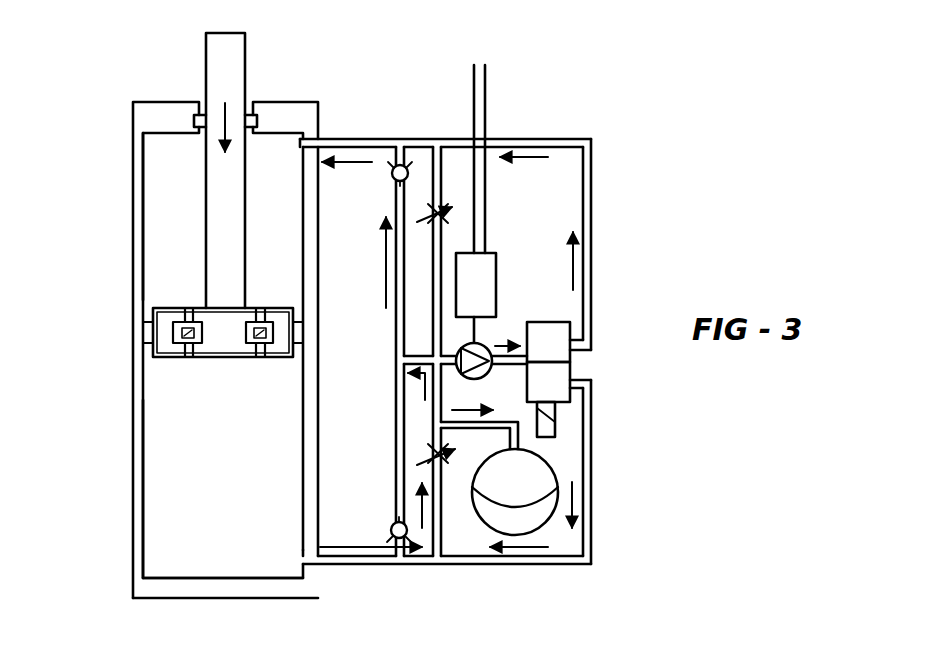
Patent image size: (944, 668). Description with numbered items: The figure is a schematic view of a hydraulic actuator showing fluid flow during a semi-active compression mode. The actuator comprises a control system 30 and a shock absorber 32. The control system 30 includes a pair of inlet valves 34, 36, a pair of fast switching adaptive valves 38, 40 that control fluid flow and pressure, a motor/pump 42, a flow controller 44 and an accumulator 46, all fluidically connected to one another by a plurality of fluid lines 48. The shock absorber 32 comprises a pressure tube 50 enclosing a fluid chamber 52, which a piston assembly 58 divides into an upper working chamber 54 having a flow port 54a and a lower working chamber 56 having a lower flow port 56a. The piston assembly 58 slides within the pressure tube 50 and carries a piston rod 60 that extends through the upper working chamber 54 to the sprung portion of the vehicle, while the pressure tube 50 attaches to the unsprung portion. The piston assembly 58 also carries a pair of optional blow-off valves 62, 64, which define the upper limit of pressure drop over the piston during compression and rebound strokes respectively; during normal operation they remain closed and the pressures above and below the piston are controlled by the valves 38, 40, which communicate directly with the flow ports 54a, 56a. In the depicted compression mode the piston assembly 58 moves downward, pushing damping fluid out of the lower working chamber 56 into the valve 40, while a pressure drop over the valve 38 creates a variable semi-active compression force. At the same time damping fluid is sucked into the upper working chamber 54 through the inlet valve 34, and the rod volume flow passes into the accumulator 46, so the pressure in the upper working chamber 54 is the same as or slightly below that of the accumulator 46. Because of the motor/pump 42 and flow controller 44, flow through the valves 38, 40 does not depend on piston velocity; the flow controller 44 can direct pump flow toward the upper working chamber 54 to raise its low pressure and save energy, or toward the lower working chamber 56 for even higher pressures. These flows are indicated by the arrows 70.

The control system 30 is at (583, 90).
The shock absorber 32 is at (130, 497).
The inlet valve 34 is at (390, 167).
The inlet valve 36 is at (397, 540).
The valve 38 is at (450, 206).
The valve 40 is at (445, 455).
The motor/pump 42 is at (496, 270).
The flow controller 44 is at (560, 322).
The accumulator 46 is at (532, 475).
The fluid lines 48 is at (592, 208).
The pressure tube 50 is at (130, 545).
The fluid chamber 52 is at (217, 415).
The upper working chamber 54 is at (192, 252).
The flow port 54a is at (300, 141).
The lower working chamber 56 is at (235, 522).
The lower flow port 56a is at (303, 556).
The piston assembly 58 is at (168, 313).
The piston rod 60 is at (233, 72).
The blow-off valve 62 is at (178, 342).
The blow-off valve 64 is at (252, 335).
The arrows 70 is at (353, 163).